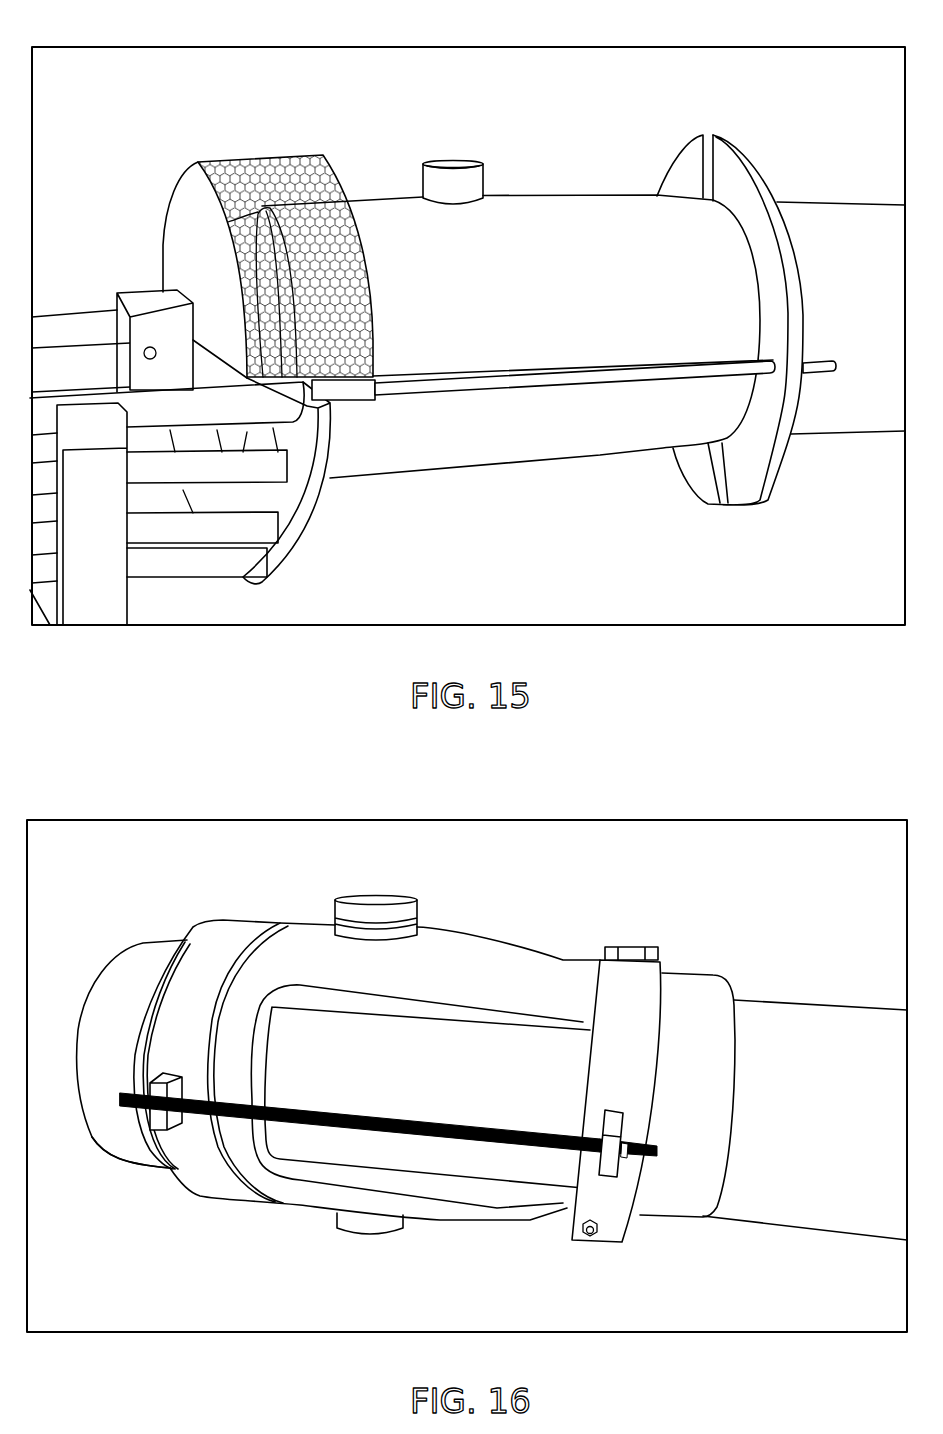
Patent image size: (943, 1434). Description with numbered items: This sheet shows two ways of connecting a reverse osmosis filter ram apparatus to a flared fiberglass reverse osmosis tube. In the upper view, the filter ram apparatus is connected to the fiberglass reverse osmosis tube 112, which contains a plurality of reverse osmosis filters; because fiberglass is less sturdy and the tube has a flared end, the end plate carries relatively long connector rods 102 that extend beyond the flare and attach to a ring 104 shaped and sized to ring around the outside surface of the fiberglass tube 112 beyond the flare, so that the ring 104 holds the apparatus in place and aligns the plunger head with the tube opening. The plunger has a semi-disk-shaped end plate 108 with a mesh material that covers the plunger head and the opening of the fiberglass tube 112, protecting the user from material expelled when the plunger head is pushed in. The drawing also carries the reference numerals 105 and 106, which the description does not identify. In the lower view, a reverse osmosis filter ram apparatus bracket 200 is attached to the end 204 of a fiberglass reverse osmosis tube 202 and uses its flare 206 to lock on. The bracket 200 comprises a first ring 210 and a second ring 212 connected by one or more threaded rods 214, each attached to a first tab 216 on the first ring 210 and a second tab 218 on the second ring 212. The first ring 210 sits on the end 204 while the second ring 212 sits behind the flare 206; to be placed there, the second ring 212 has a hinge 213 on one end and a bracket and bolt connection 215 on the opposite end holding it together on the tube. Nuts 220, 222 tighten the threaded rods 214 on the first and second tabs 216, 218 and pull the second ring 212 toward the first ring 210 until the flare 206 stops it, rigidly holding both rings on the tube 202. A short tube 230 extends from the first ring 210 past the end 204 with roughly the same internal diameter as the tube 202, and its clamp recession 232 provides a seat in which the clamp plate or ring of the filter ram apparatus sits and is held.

In FIG. 15, the connector rods 102 is at (520, 380).
In FIG. 15, the ring 104 is at (760, 173).
In FIG. 15, the ring 105 is at (707, 137).
In FIG. 15, the honeycomb band 106 is at (280, 178).
In FIG. 15, the semi-disk-shaped end plate 108 is at (192, 223).
In FIG. 15, the fiberglass reverse osmosis tube 112 is at (818, 233).
In FIG. 16, the reverse osmosis filter ram apparatus bracket 200 is at (138, 808).
In FIG. 16, the fiberglass reverse osmosis tube 202 is at (820, 1057).
In FIG. 16, the end 204 is at (177, 1203).
In FIG. 16, the flare 206 is at (325, 960).
In FIG. 16, the first ring 210 is at (232, 940).
In FIG. 16, the second ring 212 is at (698, 998).
In FIG. 16, the hinge 213 is at (633, 947).
In FIG. 16, the threaded rods 214 is at (300, 1123).
In FIG. 16, the bracket and bolt connection 215 is at (578, 1232).
In FIG. 16, the first tab 216 is at (168, 1130).
In FIG. 16, the second tab 218 is at (607, 1162).
In FIG. 16, the nut 220 is at (77, 1030).
In FIG. 16, the nut 222 is at (625, 1137).
In FIG. 16, the short tube 230 is at (97, 1115).
In FIG. 16, the clamp recession 232 is at (147, 1017).